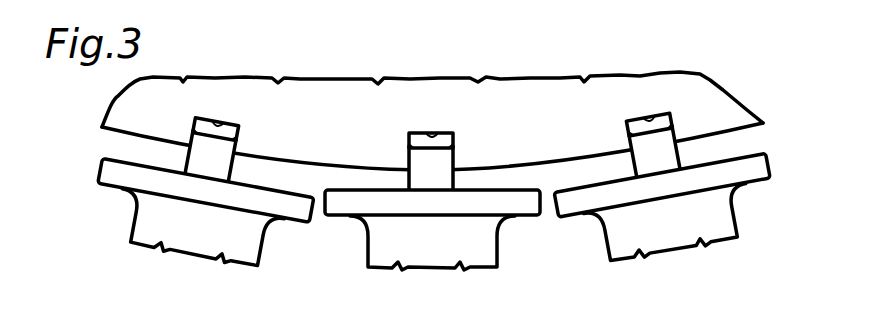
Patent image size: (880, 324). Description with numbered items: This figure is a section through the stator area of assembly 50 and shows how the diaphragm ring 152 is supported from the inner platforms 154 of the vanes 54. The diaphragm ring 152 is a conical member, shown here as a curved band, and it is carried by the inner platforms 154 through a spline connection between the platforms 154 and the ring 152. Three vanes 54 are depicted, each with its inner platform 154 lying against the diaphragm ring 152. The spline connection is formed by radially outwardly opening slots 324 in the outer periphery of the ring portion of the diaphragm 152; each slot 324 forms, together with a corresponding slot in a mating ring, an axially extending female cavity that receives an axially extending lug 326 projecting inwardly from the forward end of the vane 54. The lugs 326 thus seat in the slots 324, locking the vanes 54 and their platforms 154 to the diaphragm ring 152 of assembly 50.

The assembly 50 is at (409, 56).
The diaphragm ring 152 is at (452, 93).
The inner platform 154 is at (118, 170).
The radially outwardly opening slot 324 is at (220, 127).
The axially extending lug 326 is at (222, 151).
The vane 54 is at (178, 251).